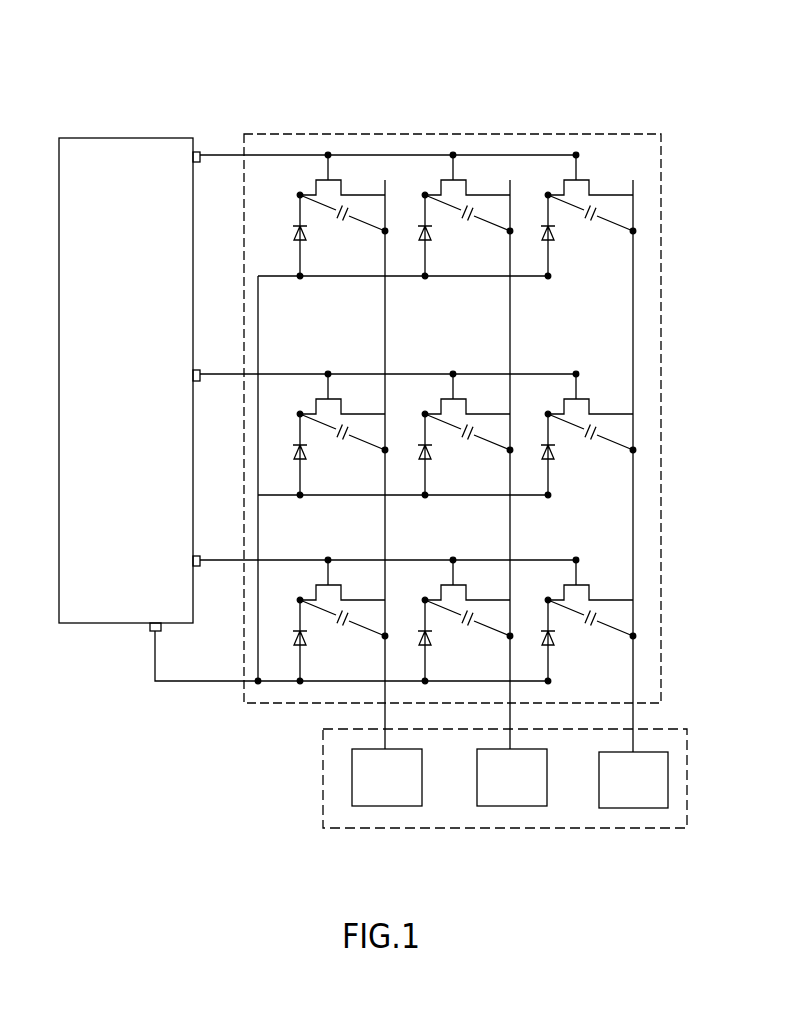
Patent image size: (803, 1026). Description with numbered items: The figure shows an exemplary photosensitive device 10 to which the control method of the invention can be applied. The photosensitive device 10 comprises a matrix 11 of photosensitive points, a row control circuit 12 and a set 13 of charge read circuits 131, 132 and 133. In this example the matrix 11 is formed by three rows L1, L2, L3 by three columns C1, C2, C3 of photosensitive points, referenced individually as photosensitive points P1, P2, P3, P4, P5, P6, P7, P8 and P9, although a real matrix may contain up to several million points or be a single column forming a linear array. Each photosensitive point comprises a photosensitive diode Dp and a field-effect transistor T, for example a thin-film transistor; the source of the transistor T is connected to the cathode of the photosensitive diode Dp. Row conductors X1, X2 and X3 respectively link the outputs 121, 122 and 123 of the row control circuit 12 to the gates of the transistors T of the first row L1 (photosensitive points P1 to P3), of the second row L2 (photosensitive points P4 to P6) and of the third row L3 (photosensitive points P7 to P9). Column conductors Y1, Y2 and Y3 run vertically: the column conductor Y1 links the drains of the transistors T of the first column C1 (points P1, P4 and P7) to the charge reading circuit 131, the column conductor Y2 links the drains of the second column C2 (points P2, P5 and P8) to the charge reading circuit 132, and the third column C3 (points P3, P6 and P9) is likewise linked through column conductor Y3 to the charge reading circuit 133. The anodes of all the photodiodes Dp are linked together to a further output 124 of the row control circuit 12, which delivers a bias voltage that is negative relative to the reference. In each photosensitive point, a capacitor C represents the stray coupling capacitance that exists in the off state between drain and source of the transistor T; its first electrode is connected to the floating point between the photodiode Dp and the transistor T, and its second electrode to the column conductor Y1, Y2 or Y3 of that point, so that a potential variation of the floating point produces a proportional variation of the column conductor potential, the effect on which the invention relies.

The photosensitive device 10 is at (201, 36).
The matrix of photosensitive points 11 is at (618, 134).
The row control circuit 12 is at (59, 348).
The set of charge read circuits 13 is at (323, 797).
The output of the row control circuit 121 is at (198, 152).
The output of the row control circuit 122 is at (197, 370).
The output of the row control circuit 123 is at (197, 555).
The output of the row control circuit 124 is at (148, 630).
The charge read circuit 131 is at (380, 806).
The charge read circuit 132 is at (507, 806).
The charge read circuit 133 is at (630, 808).
The first column C1 is at (319, 95).
The second column C2 is at (445, 95).
The third column C3 is at (569, 95).
The first row L1 is at (690, 217).
The second row L2 is at (690, 435).
The third row L3 is at (690, 621).
The row conductor X1 is at (575, 155).
The row conductor X2 is at (575, 374).
The row conductor X3 is at (575, 560).
The column conductor Y1 is at (387, 181).
The column conductor Y2 is at (512, 181).
The column conductor Y3 is at (635, 181).
The field-effect transistor T is at (466, 376).
The capacitor C is at (466, 429).
The photosensitive diode Dp is at (409, 434).
The photosensitive point P1 is at (365, 271).
The photosensitive point P2 is at (490, 271).
The photosensitive point P3 is at (613, 271).
The photosensitive point P4 is at (365, 490).
The photosensitive point P5 is at (490, 490).
The photosensitive point P6 is at (613, 490).
The photosensitive point P7 is at (365, 676).
The photosensitive point P8 is at (490, 676).
The photosensitive point P9 is at (613, 676).